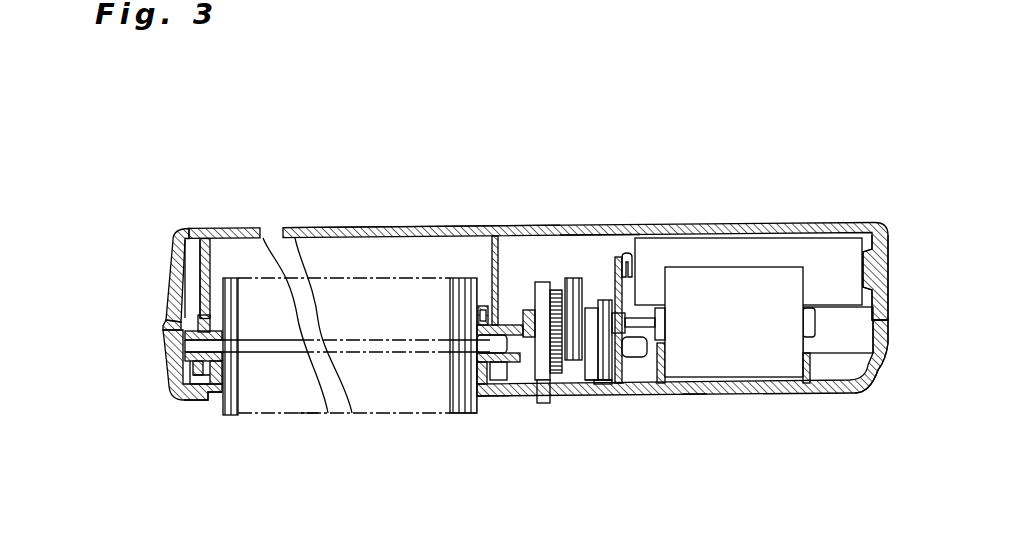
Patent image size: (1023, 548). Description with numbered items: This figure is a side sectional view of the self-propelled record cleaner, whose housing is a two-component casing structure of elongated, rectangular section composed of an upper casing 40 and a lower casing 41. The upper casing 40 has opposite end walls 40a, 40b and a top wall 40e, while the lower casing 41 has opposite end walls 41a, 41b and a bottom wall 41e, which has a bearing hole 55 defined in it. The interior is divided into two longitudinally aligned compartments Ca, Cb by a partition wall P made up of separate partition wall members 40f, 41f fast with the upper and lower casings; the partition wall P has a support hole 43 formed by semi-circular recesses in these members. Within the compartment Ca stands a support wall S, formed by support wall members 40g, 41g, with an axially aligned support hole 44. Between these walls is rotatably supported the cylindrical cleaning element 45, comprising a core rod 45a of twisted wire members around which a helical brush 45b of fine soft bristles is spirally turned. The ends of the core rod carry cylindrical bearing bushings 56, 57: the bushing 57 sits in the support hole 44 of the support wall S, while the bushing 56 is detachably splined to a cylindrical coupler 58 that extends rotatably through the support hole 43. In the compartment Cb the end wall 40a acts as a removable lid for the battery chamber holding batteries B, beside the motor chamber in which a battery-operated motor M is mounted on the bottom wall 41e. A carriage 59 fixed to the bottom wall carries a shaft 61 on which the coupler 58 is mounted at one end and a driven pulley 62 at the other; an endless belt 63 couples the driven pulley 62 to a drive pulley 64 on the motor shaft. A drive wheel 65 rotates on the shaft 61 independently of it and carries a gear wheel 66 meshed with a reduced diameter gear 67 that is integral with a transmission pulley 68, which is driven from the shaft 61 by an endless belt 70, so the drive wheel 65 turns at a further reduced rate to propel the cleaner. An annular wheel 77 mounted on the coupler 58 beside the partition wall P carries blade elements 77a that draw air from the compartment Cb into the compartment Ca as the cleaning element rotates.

The upper casing 40 is at (712, 221).
The end wall 40a is at (890, 256).
The end wall 40b is at (172, 260).
The top wall 40e is at (360, 227).
The partition wall member 40f is at (510, 226).
The support wall member 40g is at (237, 228).
The lower casing 41 is at (791, 397).
The end wall 41a is at (885, 343).
The end wall 41b is at (167, 362).
The bottom wall 41e is at (853, 395).
The partition wall member 41f is at (497, 397).
The support wall member 41g is at (217, 394).
The support hole 43 is at (536, 384).
The support hole 44 is at (222, 362).
The cylindrical cleaning element 45 is at (442, 405).
The core rod 45a is at (305, 418).
The helical brush 45b is at (462, 415).
The bearing hole 55 is at (697, 394).
The bearing bushing 56 is at (490, 344).
The bearing bushing 57 is at (183, 326).
The cylindrical coupler 58 is at (545, 403).
The carriage 59 is at (600, 380).
The shaft 61 is at (591, 380).
The driven pulley 62 is at (620, 383).
The endless belt 63 is at (660, 384).
The drive pulley 64 is at (618, 305).
The drive wheel 65 is at (600, 384).
The gear wheel 66 is at (560, 292).
The reduced diameter gear 67 is at (543, 282).
The transmission pulley 68 is at (575, 292).
The endless belt 70 is at (618, 256).
The annular wheel 77 is at (477, 307).
The blade elements 77a is at (481, 243).
The batteries B is at (807, 253).
The compartment Ca is at (318, 228).
The compartment Cb is at (592, 248).
The motor M is at (765, 358).
The partition wall P is at (493, 244).
The support wall S is at (217, 250).